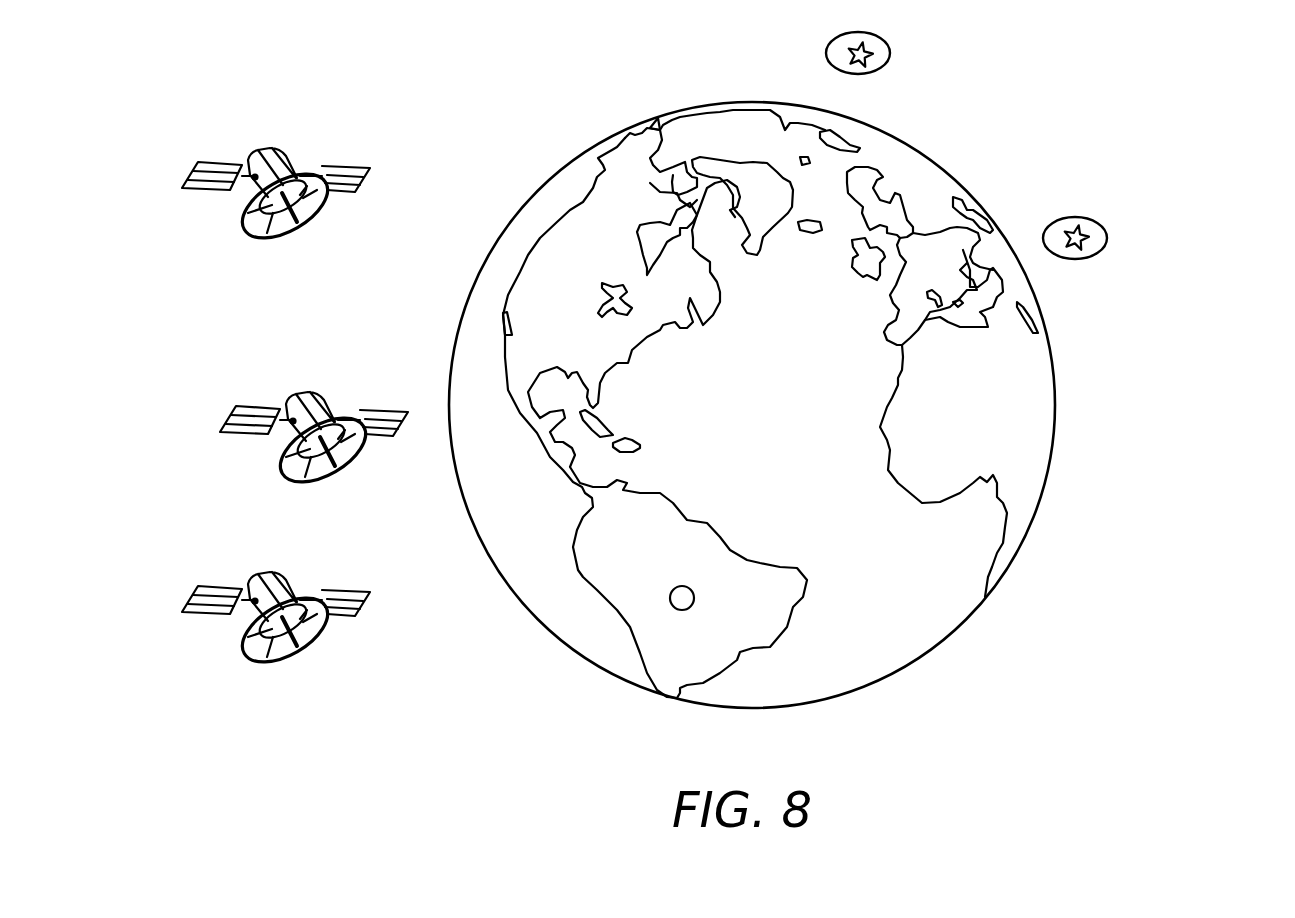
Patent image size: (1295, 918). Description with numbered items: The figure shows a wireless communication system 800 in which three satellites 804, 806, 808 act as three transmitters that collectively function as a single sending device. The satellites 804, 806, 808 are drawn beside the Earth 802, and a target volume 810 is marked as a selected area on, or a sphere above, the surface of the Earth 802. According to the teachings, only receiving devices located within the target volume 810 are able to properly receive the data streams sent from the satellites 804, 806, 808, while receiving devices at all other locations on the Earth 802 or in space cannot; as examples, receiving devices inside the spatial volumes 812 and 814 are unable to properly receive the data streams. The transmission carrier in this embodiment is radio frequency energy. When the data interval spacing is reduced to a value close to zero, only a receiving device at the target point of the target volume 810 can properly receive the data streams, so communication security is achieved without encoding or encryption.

The wireless communication system 800 is at (1226, 150).
The Earth 802 is at (957, 628).
The satellite 804 is at (269, 149).
The satellite 806 is at (314, 419).
The satellite 808 is at (276, 599).
The target volume 810 is at (669, 601).
The spatial volume 812 is at (889, 50).
The spatial volume 814 is at (1106, 236).